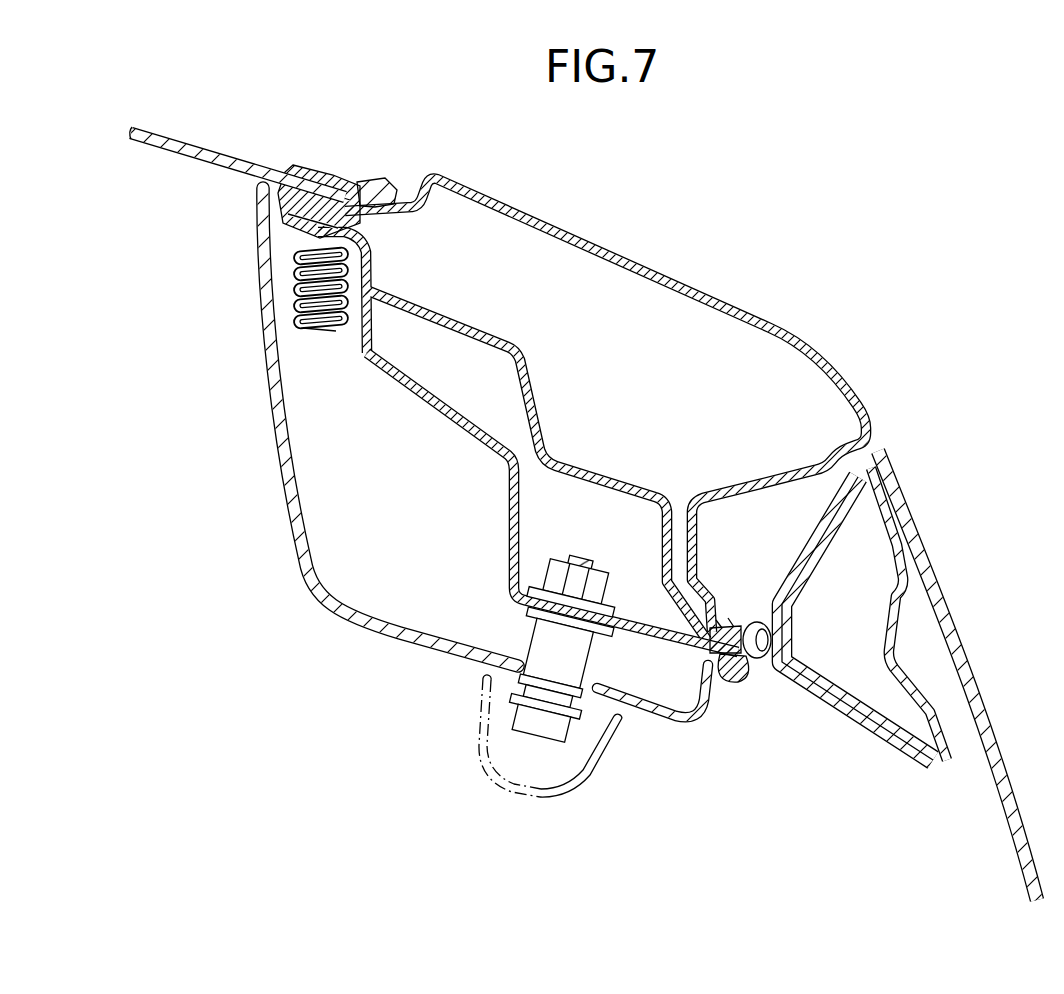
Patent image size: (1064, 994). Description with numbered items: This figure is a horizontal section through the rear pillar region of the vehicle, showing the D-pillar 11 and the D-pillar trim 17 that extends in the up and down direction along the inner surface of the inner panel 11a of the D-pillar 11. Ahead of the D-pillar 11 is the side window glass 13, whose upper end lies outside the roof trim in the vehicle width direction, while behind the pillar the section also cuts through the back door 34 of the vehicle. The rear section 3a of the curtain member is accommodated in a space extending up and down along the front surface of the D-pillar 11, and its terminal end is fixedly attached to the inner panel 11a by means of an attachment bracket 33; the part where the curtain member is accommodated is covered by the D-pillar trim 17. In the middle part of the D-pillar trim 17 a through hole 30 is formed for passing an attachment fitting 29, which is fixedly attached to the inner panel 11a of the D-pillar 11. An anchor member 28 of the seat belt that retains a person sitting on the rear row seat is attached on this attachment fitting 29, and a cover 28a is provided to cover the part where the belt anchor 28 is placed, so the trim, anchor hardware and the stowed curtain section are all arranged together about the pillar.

The D-pillar 11 is at (751, 309).
The inner panel 11a is at (509, 513).
The side window glass 13 is at (172, 154).
The D-pillar trim 17 is at (290, 539).
The rear section of the curtain member 3a is at (263, 324).
The attachment bracket 33 is at (320, 330).
The back door 34 is at (941, 561).
The anchor member 28 is at (531, 747).
The cover 28a is at (480, 767).
The attachment fitting 29 is at (547, 667).
The through hole 30 is at (647, 714).